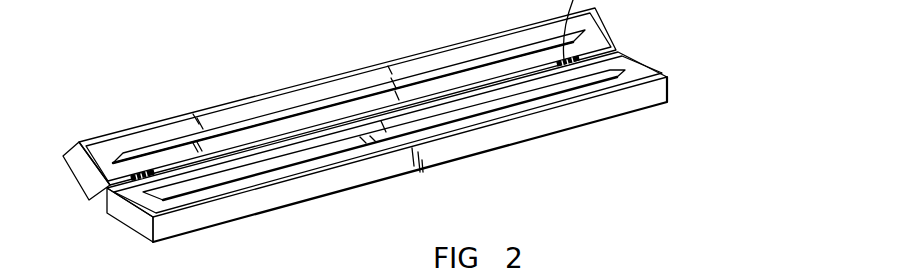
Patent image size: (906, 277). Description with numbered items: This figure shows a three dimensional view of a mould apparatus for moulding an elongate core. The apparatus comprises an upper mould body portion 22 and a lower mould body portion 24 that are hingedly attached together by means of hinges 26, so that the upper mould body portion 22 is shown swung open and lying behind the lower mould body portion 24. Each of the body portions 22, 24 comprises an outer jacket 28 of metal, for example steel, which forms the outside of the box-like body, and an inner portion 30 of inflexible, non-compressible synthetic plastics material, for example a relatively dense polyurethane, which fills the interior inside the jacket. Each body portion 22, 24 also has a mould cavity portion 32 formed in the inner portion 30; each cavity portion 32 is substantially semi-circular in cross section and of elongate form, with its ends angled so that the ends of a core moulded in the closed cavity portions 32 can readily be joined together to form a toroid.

The upper mould body portion 22 is at (362, 58).
The lower mould body portion 24 is at (380, 190).
The hinge 26 is at (135, 172).
The outer jacket 28 is at (487, 33).
The inner portion 30 is at (236, 114).
The mould cavity portion 32 is at (283, 117).